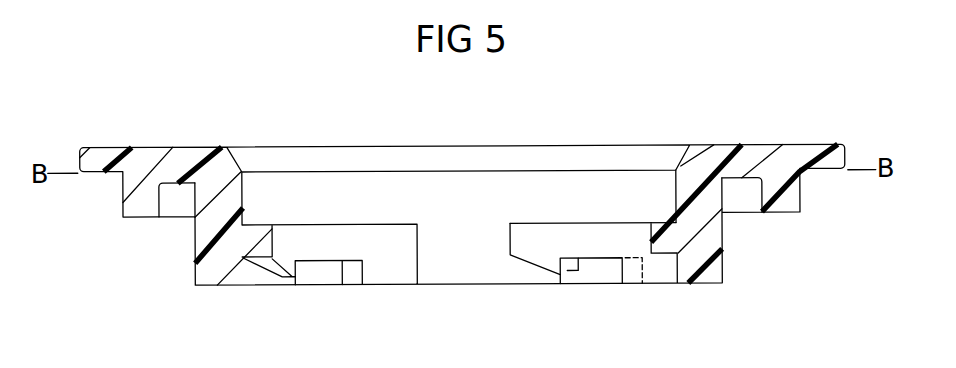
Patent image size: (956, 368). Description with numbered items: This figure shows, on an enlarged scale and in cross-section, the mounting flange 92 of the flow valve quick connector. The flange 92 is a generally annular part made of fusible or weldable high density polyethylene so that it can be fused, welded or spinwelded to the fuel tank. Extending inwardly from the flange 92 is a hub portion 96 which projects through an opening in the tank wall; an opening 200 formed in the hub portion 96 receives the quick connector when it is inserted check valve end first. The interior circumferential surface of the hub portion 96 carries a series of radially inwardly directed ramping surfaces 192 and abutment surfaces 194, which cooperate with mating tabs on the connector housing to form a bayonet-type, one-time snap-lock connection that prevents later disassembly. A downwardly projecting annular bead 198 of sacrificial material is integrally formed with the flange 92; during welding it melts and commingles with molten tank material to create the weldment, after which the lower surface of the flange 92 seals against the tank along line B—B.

The flange 92 is at (708, 117).
The hub portion 96 is at (723, 258).
The ramping surfaces 192 is at (271, 264).
The abutment surfaces 194 is at (291, 275).
The annular bead 198 is at (136, 202).
The opening 200 is at (669, 187).